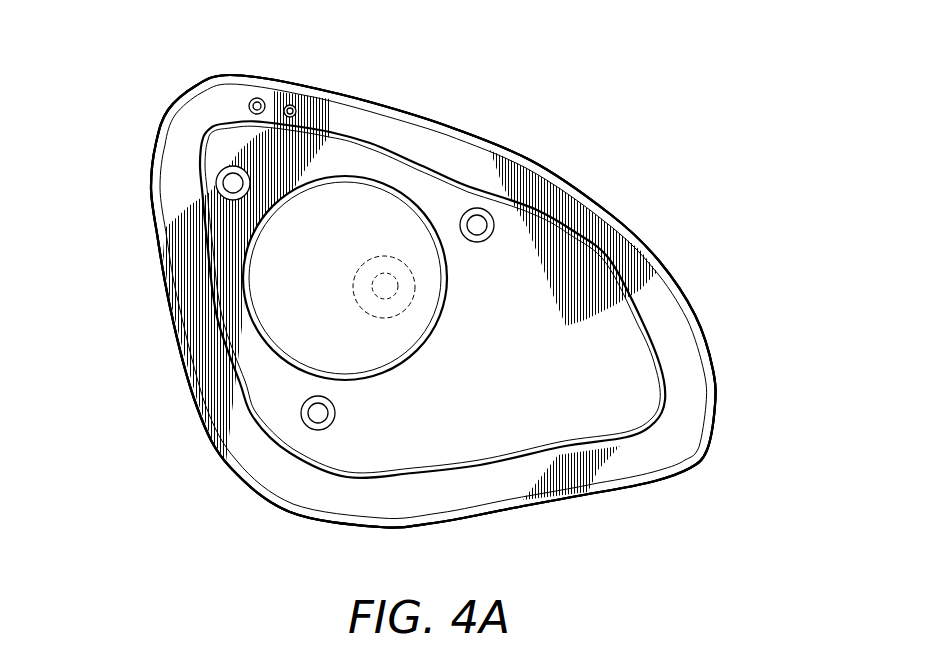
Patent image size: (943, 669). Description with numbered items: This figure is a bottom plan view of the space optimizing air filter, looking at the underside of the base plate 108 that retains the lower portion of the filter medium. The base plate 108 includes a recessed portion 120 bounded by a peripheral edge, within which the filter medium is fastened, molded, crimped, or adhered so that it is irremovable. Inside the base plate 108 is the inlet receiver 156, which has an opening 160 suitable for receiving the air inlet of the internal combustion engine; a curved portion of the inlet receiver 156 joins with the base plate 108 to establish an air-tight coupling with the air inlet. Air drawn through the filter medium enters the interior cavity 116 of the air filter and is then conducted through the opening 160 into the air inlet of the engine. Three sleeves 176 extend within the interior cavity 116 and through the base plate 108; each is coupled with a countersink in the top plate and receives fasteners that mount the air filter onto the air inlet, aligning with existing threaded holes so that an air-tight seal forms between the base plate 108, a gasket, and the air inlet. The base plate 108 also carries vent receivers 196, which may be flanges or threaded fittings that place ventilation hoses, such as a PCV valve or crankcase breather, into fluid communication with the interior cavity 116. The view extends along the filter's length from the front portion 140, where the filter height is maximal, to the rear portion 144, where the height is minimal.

The base plate 108 is at (615, 212).
The interior cavity 116 is at (323, 268).
The recessed portion 120 is at (668, 312).
The front portion 140 is at (130, 278).
The rear portion 144 is at (752, 377).
The inlet receiver 156 is at (378, 178).
The opening 160 is at (278, 362).
The sleeve 176 is at (218, 176).
The vent receiver 196 is at (289, 105).